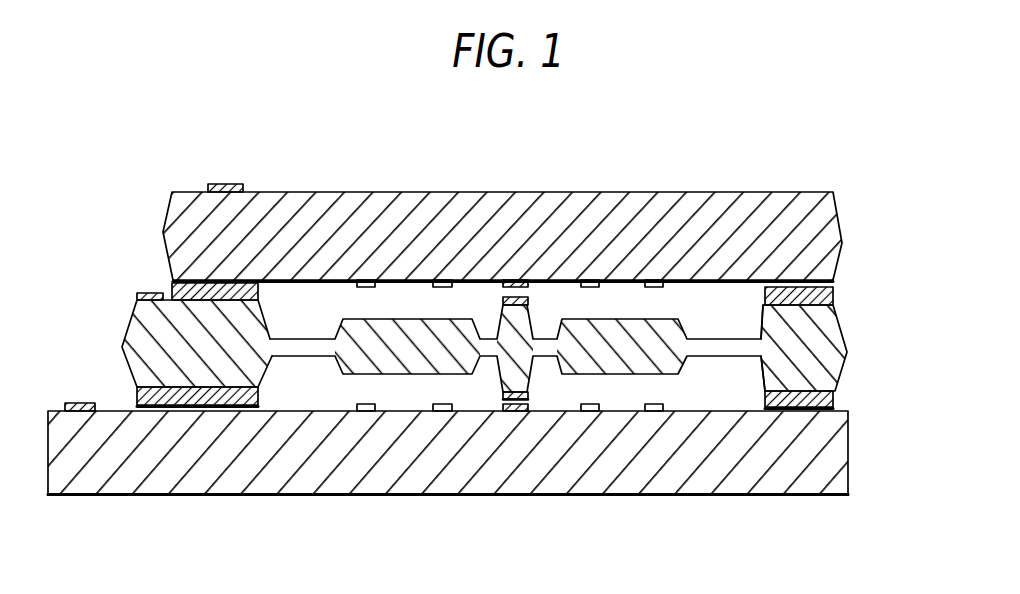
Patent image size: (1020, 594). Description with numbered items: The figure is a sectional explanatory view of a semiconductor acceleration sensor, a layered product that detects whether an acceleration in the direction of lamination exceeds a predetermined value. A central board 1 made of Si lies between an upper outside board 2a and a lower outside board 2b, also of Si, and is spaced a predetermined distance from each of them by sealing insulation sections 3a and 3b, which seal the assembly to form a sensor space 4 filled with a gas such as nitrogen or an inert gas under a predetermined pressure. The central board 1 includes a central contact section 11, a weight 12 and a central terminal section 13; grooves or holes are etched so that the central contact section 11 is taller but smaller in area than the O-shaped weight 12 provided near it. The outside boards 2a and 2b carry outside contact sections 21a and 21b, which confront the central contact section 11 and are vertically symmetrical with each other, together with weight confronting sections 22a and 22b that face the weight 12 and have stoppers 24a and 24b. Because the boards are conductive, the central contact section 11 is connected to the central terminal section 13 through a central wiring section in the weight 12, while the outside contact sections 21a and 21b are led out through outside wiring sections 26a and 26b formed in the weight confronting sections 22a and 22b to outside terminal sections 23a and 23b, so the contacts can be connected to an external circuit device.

The central board 1 is at (828, 340).
The outside board 2a is at (793, 213).
The outside board 2b is at (800, 477).
The sealing insulation section 3a is at (835, 294).
The sealing insulation section 3b is at (835, 397).
The sensor space 4 is at (408, 293).
The central contact section 11 is at (528, 318).
The weight 12 is at (350, 157).
The central terminal section 13 is at (150, 293).
The outside contact section 21a is at (515, 280).
The outside contact section 21b is at (517, 411).
The weight confronting section 22a is at (623, 280).
The weight confronting section 22b is at (630, 411).
The outside terminal section 23a is at (228, 184).
The outside terminal section 23b is at (80, 403).
The stopper 24a is at (658, 280).
The stopper 24b is at (657, 411).
The outside wiring section 26a is at (296, 210).
The outside wiring section 26b is at (293, 478).